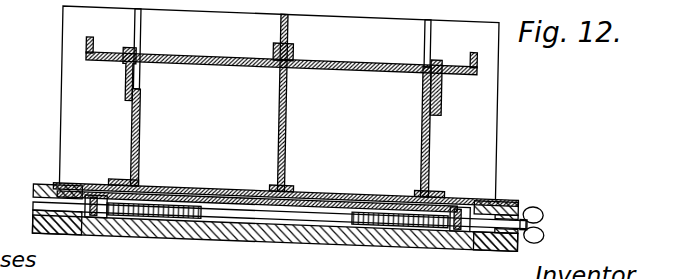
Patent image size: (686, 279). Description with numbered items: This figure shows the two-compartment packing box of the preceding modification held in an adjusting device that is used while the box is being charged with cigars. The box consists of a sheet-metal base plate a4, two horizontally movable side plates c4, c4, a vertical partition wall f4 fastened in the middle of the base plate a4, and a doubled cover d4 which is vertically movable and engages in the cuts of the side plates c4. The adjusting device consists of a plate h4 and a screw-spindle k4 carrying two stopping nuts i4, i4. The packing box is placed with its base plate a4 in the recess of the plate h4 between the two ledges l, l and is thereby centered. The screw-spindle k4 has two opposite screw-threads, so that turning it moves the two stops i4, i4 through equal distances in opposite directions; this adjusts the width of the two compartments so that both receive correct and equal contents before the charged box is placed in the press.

The cover d4 is at (341, 62).
The side plate c4 is at (140, 133).
The vertical partition wall f4 is at (286, 127).
The base plate a4 is at (323, 194).
The plate h4 is at (273, 219).
The screw-spindle k4 is at (393, 222).
The stopping nut i4 is at (448, 233).
The ledge l is at (35, 190).